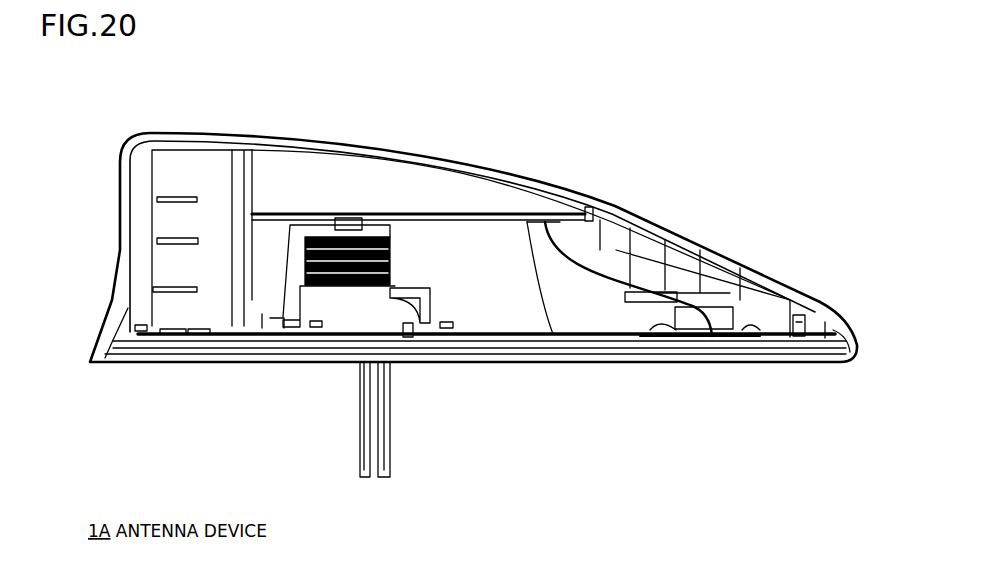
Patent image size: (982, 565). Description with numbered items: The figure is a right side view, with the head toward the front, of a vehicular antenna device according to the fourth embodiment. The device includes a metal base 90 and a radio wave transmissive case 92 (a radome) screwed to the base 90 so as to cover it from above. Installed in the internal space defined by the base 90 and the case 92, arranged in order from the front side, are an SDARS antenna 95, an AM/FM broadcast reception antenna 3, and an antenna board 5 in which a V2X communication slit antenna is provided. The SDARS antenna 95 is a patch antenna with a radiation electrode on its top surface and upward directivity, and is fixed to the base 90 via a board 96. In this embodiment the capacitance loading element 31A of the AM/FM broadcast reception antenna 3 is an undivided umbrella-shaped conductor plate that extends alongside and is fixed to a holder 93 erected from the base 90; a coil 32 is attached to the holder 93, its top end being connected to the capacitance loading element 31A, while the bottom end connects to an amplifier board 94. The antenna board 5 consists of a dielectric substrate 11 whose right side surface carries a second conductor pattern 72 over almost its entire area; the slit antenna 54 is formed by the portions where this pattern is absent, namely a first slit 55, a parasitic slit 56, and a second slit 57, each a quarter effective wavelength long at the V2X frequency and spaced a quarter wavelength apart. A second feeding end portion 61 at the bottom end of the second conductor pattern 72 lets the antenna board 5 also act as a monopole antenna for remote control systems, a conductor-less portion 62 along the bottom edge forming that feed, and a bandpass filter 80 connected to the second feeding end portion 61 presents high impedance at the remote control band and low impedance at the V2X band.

The antenna board 5 is at (146, 158).
The dielectric substrate 11 is at (239, 157).
The capacitance loading element 31A is at (343, 162).
The case 92 is at (613, 210).
The SDARS antenna 95 is at (725, 315).
The slit antenna 54 is at (147, 231).
The first slit 55 is at (160, 199).
The parasitic slit 56 is at (160, 240).
The second slit 57 is at (165, 288).
The bandpass filter 80 is at (140, 336).
The second feeding end portion 61 is at (160, 337).
The conductor-less portion 62 is at (195, 337).
The second conductor pattern 72 is at (220, 306).
The amplifier board 94 is at (358, 283).
The coil 32 is at (378, 296).
The base 90 is at (410, 362).
The AM/FM broadcast reception antenna 3 is at (476, 343).
The holder 93 is at (548, 335).
The board 96 is at (708, 338).